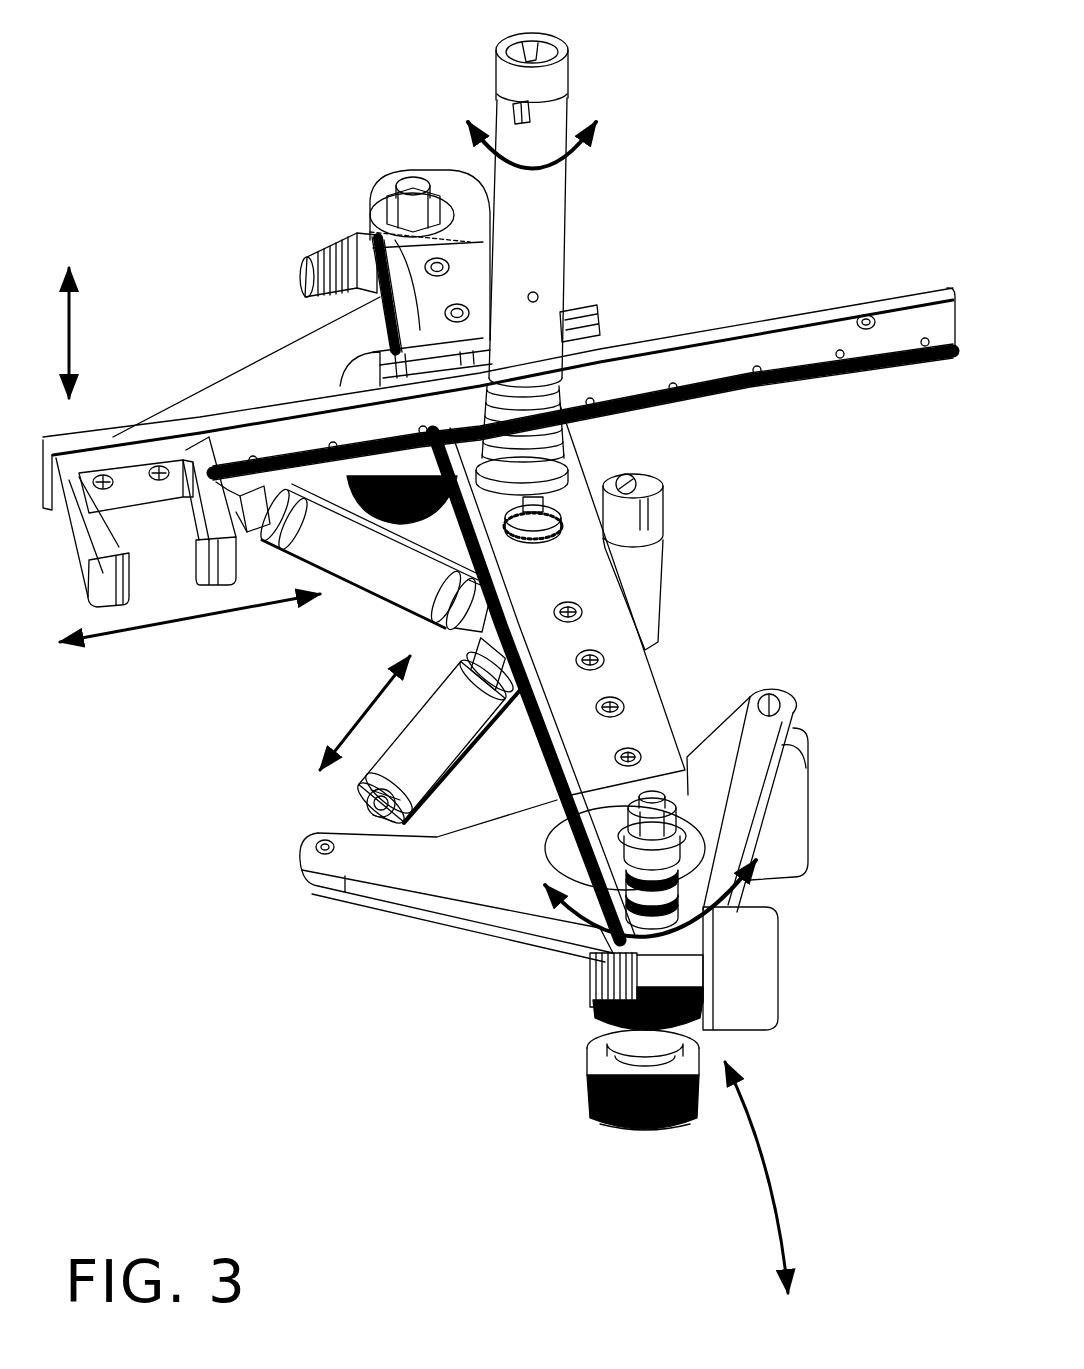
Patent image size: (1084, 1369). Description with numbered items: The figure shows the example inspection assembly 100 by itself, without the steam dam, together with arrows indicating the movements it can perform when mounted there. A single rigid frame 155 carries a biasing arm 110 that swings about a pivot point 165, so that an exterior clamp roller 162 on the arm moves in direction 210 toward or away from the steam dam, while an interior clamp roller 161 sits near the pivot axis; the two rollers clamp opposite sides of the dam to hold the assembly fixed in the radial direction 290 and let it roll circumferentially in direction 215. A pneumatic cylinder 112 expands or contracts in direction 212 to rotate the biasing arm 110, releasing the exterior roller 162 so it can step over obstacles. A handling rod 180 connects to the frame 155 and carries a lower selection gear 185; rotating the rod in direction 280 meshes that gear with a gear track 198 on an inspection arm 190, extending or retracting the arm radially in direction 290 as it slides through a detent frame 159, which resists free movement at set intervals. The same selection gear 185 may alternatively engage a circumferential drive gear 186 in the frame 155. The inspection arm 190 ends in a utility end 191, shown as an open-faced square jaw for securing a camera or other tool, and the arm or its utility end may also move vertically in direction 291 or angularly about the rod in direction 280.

The inspection assembly 100 is at (791, 222).
The biasing arm 110 is at (460, 860).
The pneumatic cylinder 112 is at (362, 827).
The frame 155 is at (630, 686).
The detent frame 159 is at (423, 330).
The interior clamp roller 161 is at (587, 1090).
The exterior clamp roller 162 is at (787, 813).
The pivot point 165 is at (417, 213).
The handling rod 180 is at (538, 207).
The selection gear 185 is at (570, 470).
The circumferential drive gear 186 is at (563, 524).
The inspection arm 190 is at (894, 330).
The utility end 191 is at (186, 450).
The gear track 198 is at (740, 392).
The direction 210 is at (743, 877).
The direction 212 is at (357, 713).
The direction 215 is at (762, 1150).
The direction 280 is at (478, 140).
The direction 290 is at (173, 627).
The direction 291 is at (75, 322).